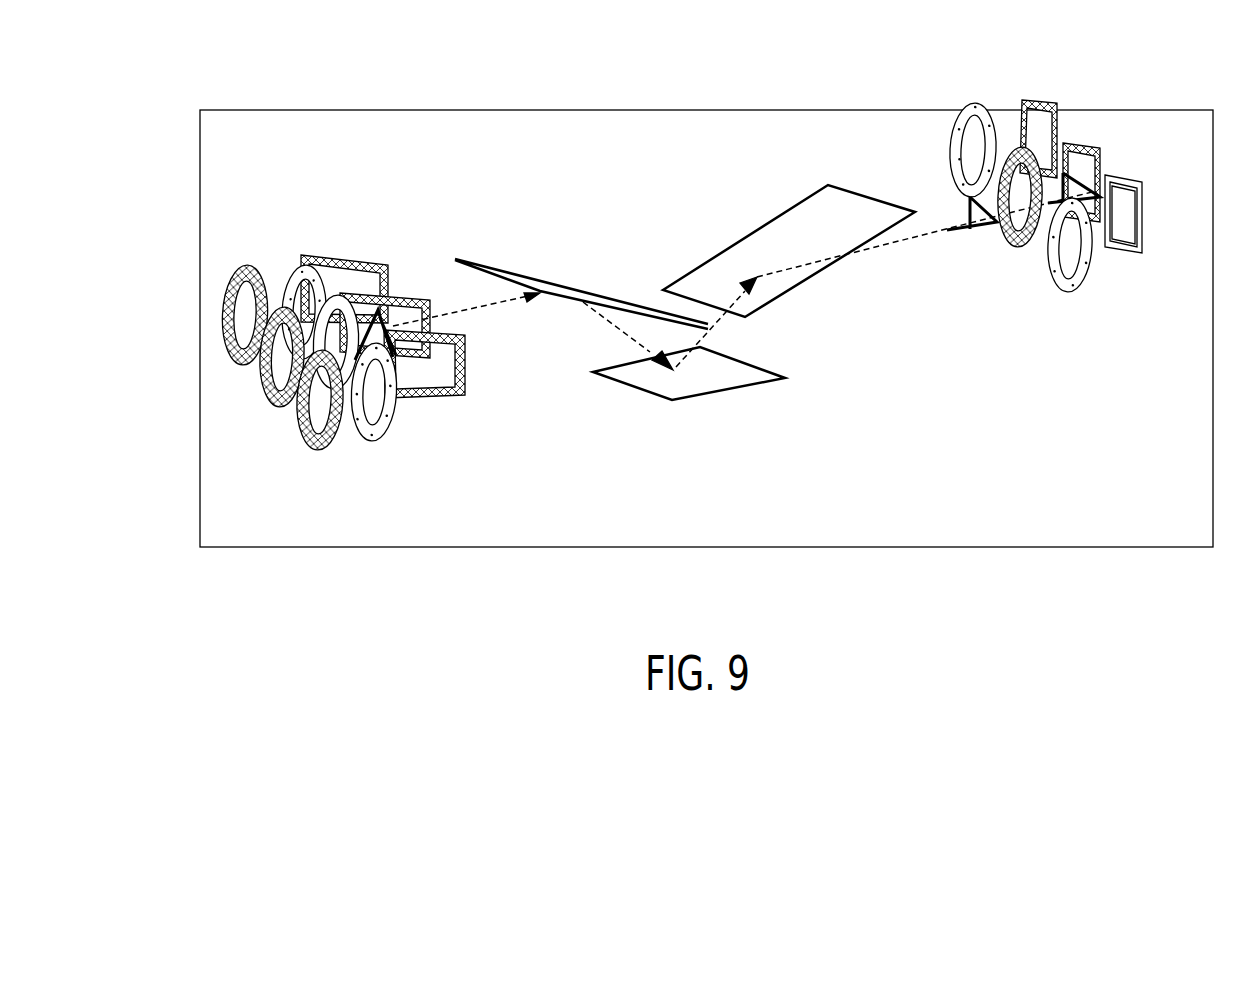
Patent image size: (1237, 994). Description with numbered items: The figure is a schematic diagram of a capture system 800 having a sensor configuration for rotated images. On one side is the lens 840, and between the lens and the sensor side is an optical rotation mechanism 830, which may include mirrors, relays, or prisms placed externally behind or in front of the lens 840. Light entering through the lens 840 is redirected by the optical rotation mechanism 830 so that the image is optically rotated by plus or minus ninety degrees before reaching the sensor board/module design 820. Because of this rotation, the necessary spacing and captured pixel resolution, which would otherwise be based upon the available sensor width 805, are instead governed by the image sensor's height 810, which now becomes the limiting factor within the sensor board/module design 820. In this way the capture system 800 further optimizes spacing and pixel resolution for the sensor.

The capture system 800 is at (922, 533).
The sensor width 805 is at (1143, 252).
The image sensor height 810 is at (1078, 180).
The sensor board/module design 820 is at (1040, 107).
The optical rotation mechanism 830 is at (848, 395).
The lens 840 is at (227, 343).